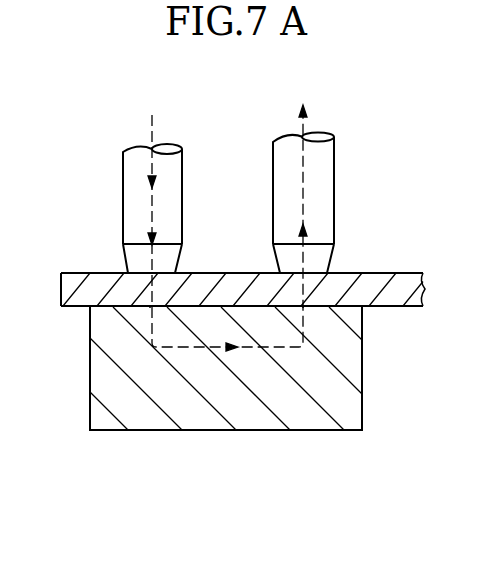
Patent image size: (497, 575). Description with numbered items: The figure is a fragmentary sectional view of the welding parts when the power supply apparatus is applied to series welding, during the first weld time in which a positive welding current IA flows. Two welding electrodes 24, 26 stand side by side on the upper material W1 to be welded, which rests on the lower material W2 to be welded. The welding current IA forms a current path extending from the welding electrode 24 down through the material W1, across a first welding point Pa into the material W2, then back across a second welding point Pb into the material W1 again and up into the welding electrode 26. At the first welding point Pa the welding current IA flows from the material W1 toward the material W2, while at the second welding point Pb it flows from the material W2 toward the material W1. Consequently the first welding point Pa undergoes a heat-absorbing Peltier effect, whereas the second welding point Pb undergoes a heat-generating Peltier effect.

The welding electrode 24 is at (122, 188).
The welding electrode 26 is at (320, 183).
The material to be welded W1 is at (380, 272).
The material to be welded W2 is at (240, 410).
The welding current IA is at (243, 219).
The first welding point Pa is at (150, 308).
The second welding point Pb is at (304, 309).